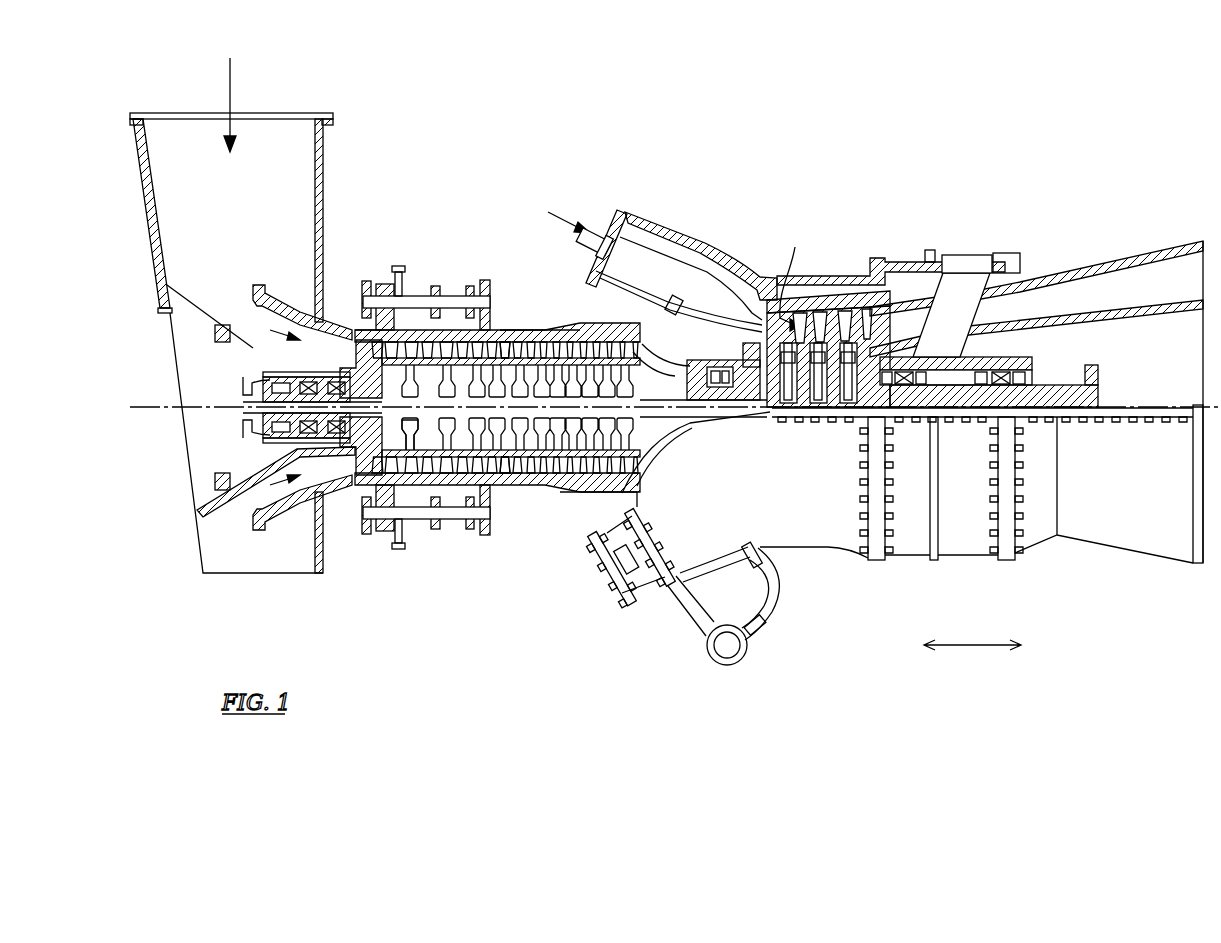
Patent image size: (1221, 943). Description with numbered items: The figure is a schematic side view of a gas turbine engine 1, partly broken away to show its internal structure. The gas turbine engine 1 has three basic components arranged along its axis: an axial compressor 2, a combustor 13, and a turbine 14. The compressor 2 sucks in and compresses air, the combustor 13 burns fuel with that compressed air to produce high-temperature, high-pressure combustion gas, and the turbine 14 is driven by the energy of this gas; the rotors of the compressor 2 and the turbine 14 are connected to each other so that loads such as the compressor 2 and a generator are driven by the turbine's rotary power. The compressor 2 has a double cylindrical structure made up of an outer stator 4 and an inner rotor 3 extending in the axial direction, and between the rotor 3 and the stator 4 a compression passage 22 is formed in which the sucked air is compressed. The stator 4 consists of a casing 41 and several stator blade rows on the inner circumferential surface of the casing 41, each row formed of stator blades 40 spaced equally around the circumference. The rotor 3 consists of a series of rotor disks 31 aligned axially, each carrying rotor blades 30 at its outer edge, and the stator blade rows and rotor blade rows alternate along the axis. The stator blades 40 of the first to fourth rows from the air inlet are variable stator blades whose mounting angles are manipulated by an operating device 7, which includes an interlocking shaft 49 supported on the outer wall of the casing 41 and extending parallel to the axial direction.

The gas turbine engine 1 is at (711, 107).
The compressor 2 is at (529, 612).
The rotor 3 is at (226, 436).
The stator 4 is at (538, 322).
The operating device 7 is at (450, 247).
The combustor 13 is at (656, 199).
The turbine 14 is at (998, 217).
The compression passage 22 is at (425, 345).
The rotor blades 30 is at (398, 533).
The rotor disks 31 is at (513, 470).
The stator blades 40 is at (368, 335).
The casing 41 is at (514, 322).
The interlocking shaft 49 is at (462, 294).